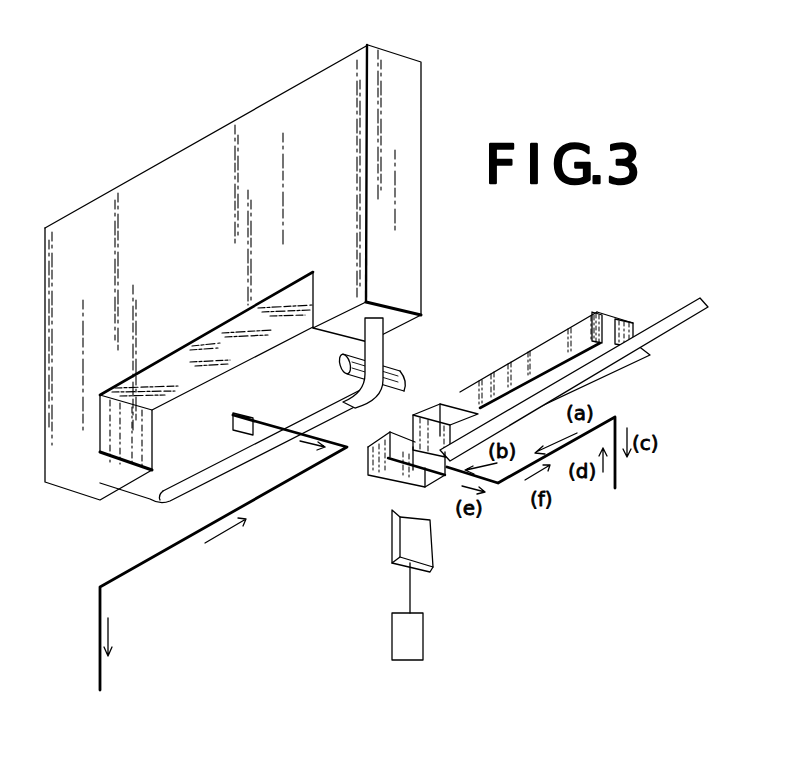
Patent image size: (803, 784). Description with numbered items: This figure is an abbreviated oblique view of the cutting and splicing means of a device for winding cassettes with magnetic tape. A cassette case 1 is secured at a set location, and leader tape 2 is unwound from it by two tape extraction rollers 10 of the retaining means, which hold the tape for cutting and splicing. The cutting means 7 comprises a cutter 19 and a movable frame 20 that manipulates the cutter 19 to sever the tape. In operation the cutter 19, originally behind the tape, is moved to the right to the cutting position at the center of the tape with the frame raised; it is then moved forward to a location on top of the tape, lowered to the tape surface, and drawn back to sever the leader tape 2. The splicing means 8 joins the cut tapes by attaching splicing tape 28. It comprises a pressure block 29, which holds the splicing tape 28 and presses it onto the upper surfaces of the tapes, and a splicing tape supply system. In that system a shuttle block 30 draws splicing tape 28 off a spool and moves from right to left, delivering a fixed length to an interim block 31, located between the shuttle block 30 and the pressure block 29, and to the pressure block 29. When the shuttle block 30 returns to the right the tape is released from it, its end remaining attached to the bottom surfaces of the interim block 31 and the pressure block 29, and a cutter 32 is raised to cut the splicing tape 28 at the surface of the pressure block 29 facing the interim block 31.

The cassette case 1 is at (284, 98).
The leader tape 2 is at (333, 397).
The cutting means 7 is at (257, 411).
The splicing means 8 is at (471, 369).
The tape extraction rollers 10 is at (402, 367).
The cutter 19 is at (235, 426).
The movable frame 20 is at (290, 490).
The splicing tape 28 is at (682, 300).
The pressure block 29 is at (368, 470).
The shuttle block 30 is at (590, 312).
The interim block 31 is at (428, 408).
The cutter 32 is at (434, 553).